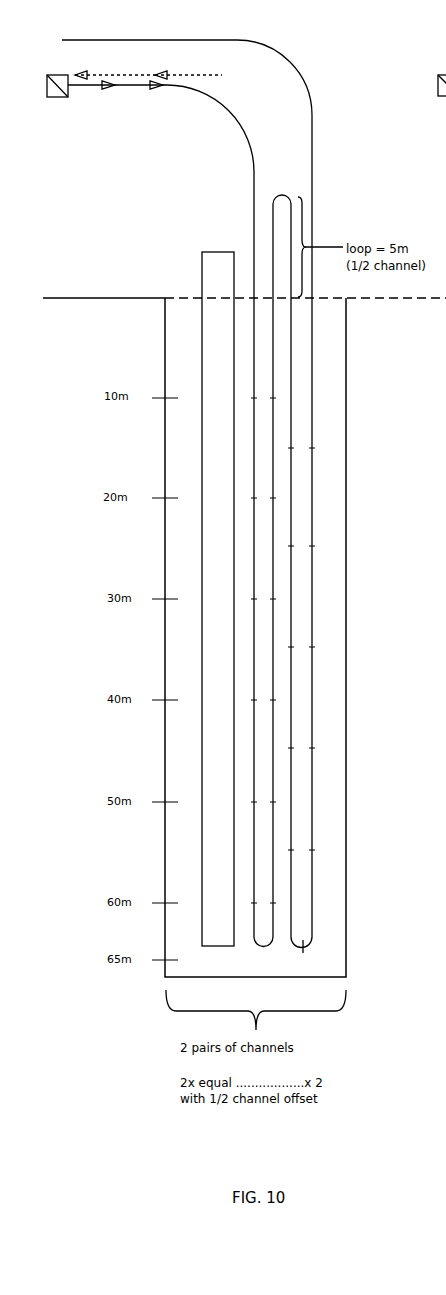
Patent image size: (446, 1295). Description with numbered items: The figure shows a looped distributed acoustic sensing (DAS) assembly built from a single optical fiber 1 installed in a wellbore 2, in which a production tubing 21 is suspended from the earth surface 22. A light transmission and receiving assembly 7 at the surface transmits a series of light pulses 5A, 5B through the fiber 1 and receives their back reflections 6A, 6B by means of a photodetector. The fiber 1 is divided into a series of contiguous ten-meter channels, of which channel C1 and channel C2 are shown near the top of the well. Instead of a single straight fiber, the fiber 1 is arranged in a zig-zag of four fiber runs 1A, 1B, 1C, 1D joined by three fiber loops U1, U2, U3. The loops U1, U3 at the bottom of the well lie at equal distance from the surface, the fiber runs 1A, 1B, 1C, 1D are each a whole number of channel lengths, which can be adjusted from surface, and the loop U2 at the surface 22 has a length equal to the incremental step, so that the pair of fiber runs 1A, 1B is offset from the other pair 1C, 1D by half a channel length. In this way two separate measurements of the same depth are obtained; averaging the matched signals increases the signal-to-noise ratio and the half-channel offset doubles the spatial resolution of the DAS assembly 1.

The optical fiber 1 is at (221, 487).
The fiber run 1A is at (224, 110).
The fiber run 1B is at (271, 228).
The fiber run 1C is at (292, 218).
The fiber run 1D is at (96, 38).
The wellbore 2 is at (172, 296).
The light pulse 5A is at (140, 87).
The light pulse 5B is at (92, 87).
The back reflection 6A is at (115, 64).
The back reflection 6B is at (190, 75).
The light transmission and receiving assembly 7 is at (60, 97).
The production tubing 21 is at (201, 263).
The earth surface 22 is at (90, 298).
The channel C1 is at (254, 345).
The channel C2 is at (254, 448).
The fiber loop U1 is at (263, 947).
The fiber loop U2 is at (281, 193).
The fiber loop U3 is at (303, 949).